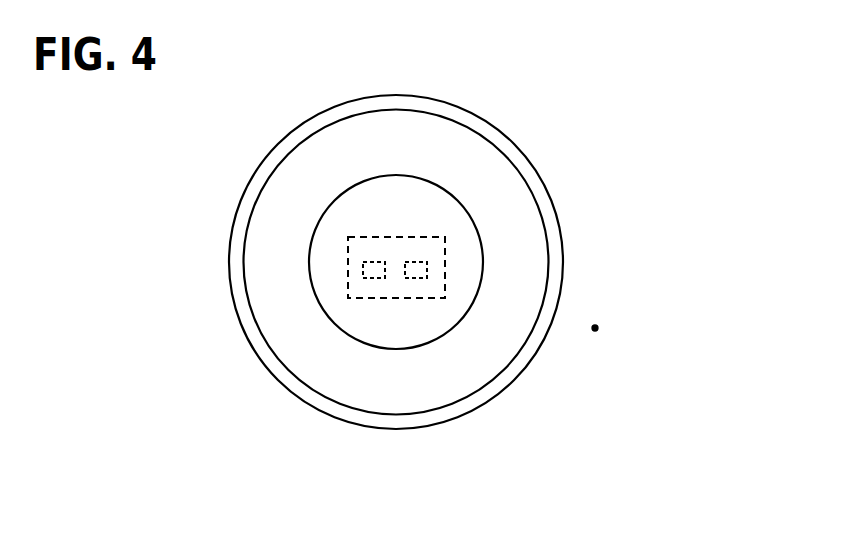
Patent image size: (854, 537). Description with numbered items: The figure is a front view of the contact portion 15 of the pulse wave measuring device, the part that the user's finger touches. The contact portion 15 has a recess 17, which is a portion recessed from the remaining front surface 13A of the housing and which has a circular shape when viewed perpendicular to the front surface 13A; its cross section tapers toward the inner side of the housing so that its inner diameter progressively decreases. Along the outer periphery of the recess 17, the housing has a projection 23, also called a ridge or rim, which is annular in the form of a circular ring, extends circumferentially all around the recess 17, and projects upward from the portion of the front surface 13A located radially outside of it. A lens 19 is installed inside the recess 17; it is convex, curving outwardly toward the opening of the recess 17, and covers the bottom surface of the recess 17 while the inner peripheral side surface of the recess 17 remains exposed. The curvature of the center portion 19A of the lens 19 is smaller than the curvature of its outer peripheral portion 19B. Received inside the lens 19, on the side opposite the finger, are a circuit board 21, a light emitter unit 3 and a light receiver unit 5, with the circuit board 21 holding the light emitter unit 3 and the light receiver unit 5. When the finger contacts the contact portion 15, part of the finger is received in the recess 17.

The projection 23 is at (497, 142).
The recess 17 is at (502, 248).
The contact portion 15 is at (422, 382).
The lens 19 is at (423, 195).
The center portion 19A is at (400, 275).
The outer peripheral portion 19B is at (330, 288).
The circuit board 21 is at (397, 248).
The light emitter unit 3 is at (372, 262).
The light receiver unit 5 is at (415, 262).
The front surface 13A is at (597, 326).